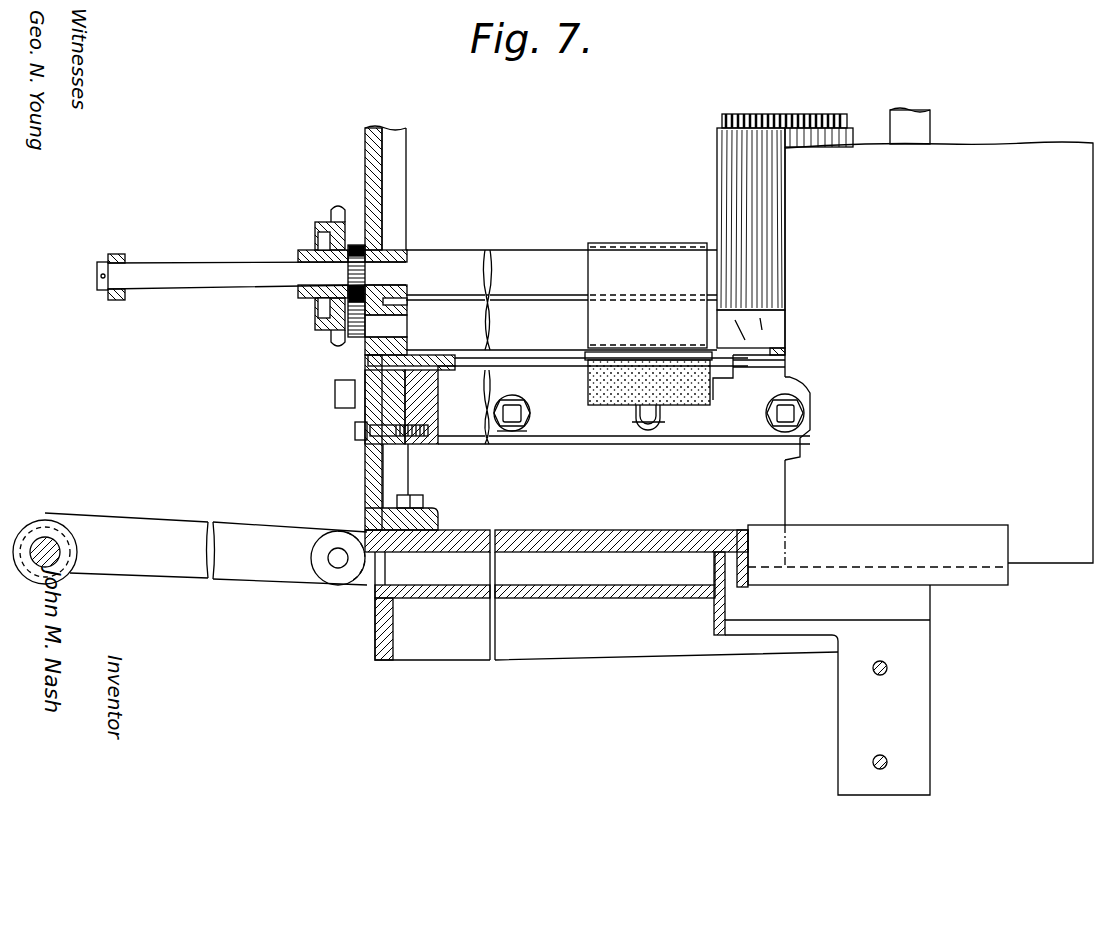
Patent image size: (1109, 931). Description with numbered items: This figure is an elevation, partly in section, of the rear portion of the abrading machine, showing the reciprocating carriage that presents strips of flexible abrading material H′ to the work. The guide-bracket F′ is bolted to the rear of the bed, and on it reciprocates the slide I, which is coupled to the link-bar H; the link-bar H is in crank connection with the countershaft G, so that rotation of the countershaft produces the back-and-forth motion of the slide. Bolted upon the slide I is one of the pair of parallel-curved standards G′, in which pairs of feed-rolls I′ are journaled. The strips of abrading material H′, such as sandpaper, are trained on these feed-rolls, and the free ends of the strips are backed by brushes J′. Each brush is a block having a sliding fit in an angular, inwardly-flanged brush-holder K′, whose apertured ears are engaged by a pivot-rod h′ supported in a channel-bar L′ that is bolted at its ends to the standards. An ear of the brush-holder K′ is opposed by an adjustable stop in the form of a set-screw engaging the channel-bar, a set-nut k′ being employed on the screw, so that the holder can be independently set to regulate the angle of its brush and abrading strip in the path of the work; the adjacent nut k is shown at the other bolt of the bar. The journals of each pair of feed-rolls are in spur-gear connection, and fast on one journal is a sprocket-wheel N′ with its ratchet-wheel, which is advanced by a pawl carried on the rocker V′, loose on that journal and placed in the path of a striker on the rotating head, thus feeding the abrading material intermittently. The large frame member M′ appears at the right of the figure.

The parallel-curved standard G′ is at (390, 182).
The sprocket-wheel N′ is at (342, 208).
The rocker V′ is at (122, 300).
The feed-roll I′ is at (461, 252).
The flexible abrading material H′ is at (668, 236).
The brush J′ is at (770, 257).
The brush-holder K′ is at (772, 337).
The frame M′ is at (920, 346).
The pivot-rod h′ is at (541, 366).
The channel-bar L′ is at (582, 443).
The bolt j′ is at (514, 427).
The set-nut k′ is at (528, 415).
The nut k is at (784, 418).
The link-bar H is at (231, 522).
The countershaft G is at (62, 551).
The slide I is at (676, 522).
The guide-bracket F′ is at (728, 614).